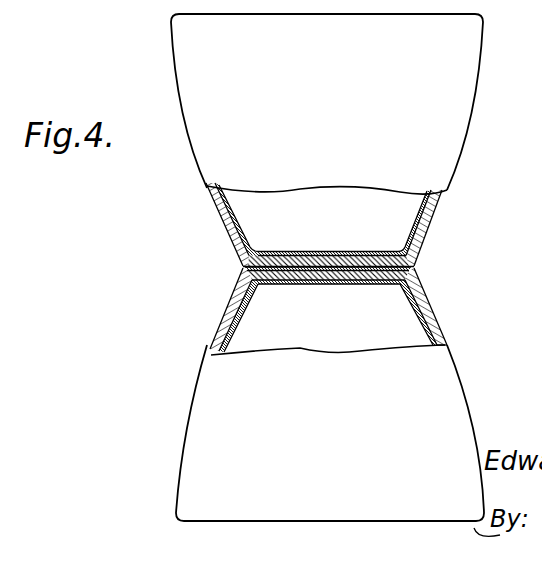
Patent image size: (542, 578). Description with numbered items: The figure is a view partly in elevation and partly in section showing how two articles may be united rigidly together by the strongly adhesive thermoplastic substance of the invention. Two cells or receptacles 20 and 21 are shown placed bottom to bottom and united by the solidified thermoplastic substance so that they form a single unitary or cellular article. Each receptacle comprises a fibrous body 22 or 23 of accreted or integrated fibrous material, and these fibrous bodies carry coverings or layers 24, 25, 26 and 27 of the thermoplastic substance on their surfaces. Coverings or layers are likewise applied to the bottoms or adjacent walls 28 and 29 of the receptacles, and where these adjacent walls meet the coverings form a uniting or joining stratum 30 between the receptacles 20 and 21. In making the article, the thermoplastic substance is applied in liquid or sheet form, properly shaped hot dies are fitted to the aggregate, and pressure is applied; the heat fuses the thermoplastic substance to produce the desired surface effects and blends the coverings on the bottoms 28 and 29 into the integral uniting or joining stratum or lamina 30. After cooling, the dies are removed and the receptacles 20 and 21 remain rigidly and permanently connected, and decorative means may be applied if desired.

The cell or receptacle 20 is at (474, 110).
The cell or receptacle 21 is at (464, 373).
The fibrous body 22 is at (441, 205).
The fibrous body 23 is at (437, 313).
The covering or layer 24 is at (423, 212).
The covering or layer 25 is at (431, 228).
The covering or layer 26 is at (420, 302).
The covering or layer 27 is at (430, 292).
The bottom or adjacent wall 28 is at (313, 260).
The bottom or adjacent wall 29 is at (320, 277).
The uniting or joining stratum 30 is at (348, 272).